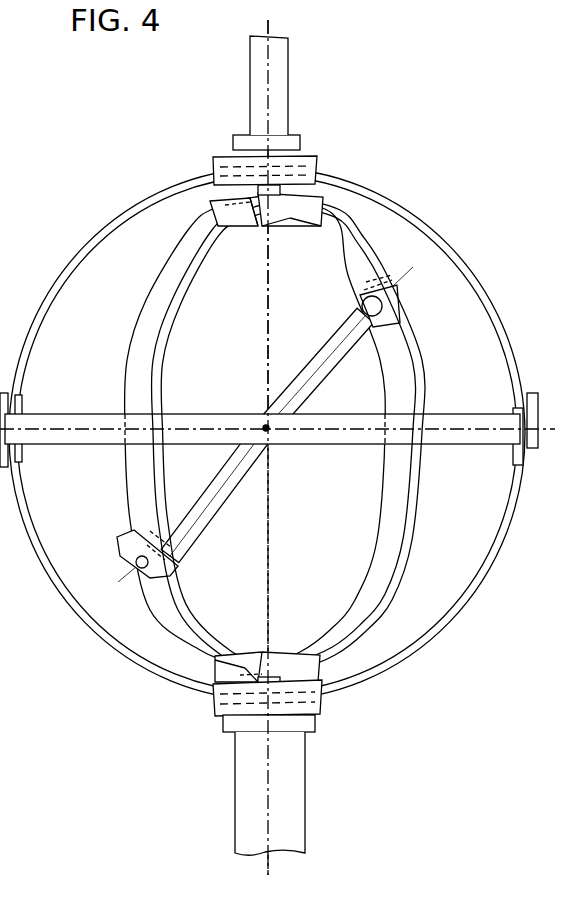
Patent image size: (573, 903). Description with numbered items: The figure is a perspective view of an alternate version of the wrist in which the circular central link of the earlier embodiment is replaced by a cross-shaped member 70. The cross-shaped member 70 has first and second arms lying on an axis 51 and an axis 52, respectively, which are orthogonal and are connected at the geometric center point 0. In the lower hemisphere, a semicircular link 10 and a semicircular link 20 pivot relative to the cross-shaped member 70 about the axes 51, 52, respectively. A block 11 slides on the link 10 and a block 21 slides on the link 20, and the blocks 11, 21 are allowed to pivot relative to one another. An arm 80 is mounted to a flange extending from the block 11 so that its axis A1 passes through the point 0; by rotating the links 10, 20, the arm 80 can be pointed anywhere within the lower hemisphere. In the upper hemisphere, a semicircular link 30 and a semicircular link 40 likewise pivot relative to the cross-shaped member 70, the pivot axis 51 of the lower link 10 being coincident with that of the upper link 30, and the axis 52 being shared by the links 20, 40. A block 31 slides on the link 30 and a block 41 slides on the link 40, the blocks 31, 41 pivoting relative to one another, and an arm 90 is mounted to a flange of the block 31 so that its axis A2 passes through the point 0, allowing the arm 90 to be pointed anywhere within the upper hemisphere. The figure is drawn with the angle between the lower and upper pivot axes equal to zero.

The semicircular link 10 is at (473, 598).
The semicircular link 30 is at (82, 253).
The block 31 is at (233, 162).
The block 11 is at (325, 700).
The arm 90 is at (277, 60).
The arm 80 is at (300, 826).
The semicircular link 20 is at (398, 538).
The semicircular link 40 is at (165, 287).
The block 41 is at (303, 214).
The block 21 is at (288, 672).
The axis 51 is at (186, 427).
The axis 52 is at (200, 498).
The cross-shaped member 70 is at (334, 432).
The point 0 is at (270, 432).
The axis A1 is at (268, 590).
The axis A2 is at (268, 322).